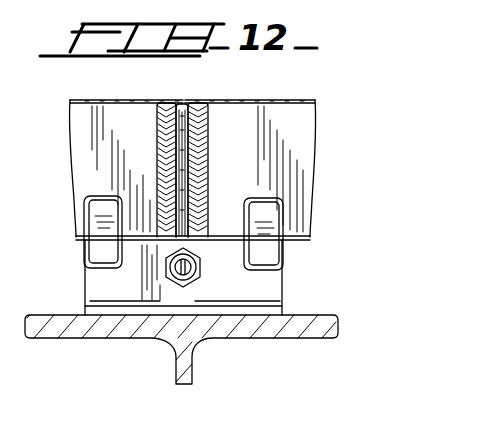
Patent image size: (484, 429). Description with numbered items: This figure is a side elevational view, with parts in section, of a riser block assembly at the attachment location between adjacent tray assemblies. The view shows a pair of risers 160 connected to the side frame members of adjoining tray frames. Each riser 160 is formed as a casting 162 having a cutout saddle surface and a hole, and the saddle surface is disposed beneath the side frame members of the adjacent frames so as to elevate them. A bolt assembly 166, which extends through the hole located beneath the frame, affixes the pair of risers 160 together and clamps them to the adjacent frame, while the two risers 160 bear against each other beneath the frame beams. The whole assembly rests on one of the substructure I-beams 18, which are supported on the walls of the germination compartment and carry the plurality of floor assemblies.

The casting 162 is at (263, 297).
The bolt assembly 166 is at (178, 272).
The substructure I-beams 18 is at (184, 340).
The risers 160 is at (68, 294).